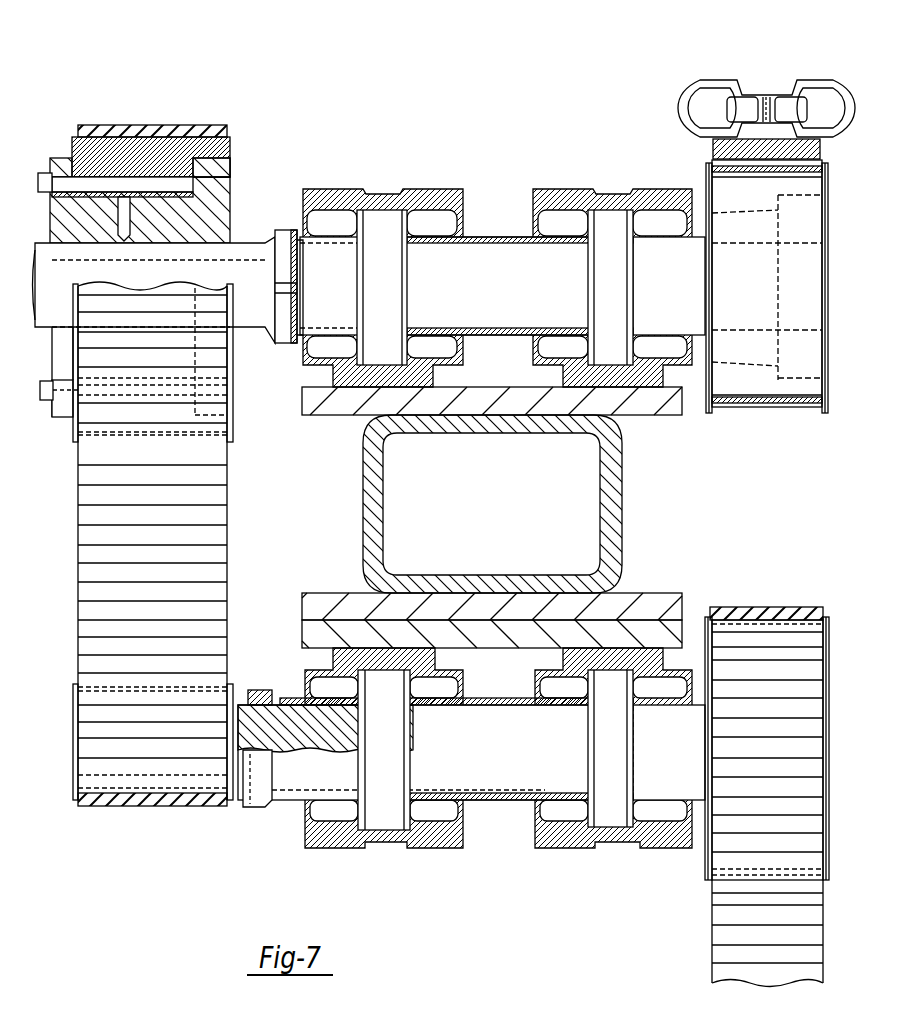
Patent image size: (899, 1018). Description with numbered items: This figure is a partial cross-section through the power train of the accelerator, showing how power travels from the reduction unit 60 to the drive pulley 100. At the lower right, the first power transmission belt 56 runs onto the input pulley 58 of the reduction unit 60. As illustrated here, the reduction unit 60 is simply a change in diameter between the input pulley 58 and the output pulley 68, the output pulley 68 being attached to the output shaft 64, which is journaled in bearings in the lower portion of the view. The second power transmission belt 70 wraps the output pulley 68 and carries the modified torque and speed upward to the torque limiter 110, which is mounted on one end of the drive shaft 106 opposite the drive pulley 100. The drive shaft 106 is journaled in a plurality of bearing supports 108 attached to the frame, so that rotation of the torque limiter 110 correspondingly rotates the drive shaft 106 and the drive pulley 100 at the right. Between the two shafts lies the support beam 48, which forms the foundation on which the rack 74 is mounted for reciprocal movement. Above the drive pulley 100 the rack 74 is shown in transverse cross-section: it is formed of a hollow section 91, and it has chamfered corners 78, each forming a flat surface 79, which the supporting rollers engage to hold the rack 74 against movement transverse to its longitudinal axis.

The support beam 48 is at (373, 520).
The first power transmission belt 56 is at (825, 920).
The input pulley 58 is at (825, 700).
The reduction unit 60 is at (497, 848).
The output shaft 64 is at (242, 810).
The output pulley 68 is at (78, 742).
The second power transmission belt 70 is at (78, 540).
The rack 74 is at (752, 95).
The chamfered corners 78 is at (683, 99).
The flat surface 79 is at (688, 83).
The hollow section 91 is at (775, 88).
The drive pulley 100 is at (826, 345).
The drive shaft 106 is at (475, 265).
The bearing supports 108 is at (318, 198).
The torque limiter 110 is at (230, 205).